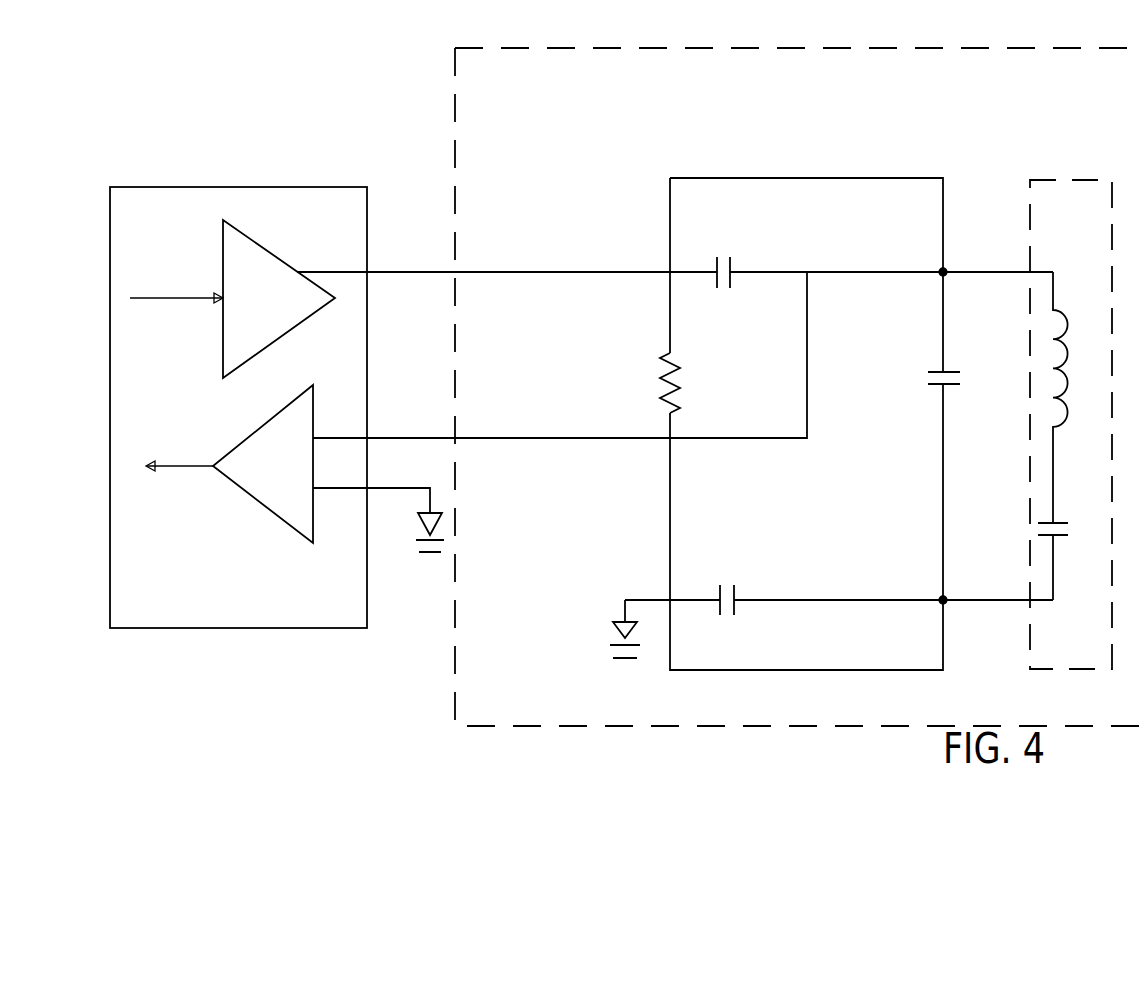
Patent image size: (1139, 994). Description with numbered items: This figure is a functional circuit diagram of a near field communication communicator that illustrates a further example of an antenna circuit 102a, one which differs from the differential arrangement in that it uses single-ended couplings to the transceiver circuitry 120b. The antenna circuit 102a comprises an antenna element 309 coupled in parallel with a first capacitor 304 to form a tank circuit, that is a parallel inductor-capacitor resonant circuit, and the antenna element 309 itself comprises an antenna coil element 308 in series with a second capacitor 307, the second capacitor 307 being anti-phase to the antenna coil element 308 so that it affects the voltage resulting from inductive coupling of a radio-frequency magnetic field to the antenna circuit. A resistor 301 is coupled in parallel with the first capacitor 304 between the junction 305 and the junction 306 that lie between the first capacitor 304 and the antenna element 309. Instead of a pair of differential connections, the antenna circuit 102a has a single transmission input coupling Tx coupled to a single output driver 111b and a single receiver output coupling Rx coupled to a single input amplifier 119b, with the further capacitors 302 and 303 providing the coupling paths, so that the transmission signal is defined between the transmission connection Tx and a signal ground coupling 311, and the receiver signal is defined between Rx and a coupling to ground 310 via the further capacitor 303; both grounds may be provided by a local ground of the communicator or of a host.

The antenna circuit 102a is at (812, 50).
The transceiver circuitry 120b is at (247, 187).
The single output driver 111b is at (282, 260).
The single input amplifier 119b is at (265, 510).
The signal ground coupling 311 is at (435, 552).
The resistor 301 is at (683, 363).
The further capacitor 302 is at (725, 257).
The further capacitor 303 is at (730, 583).
The first capacitor 304 is at (960, 380).
The junction 305 is at (952, 272).
The junction 306 is at (946, 603).
The second capacitor 307 is at (1068, 538).
The antenna coil element 308 is at (1072, 300).
The antenna element 309 is at (1061, 677).
The coupling to ground 310 is at (627, 648).